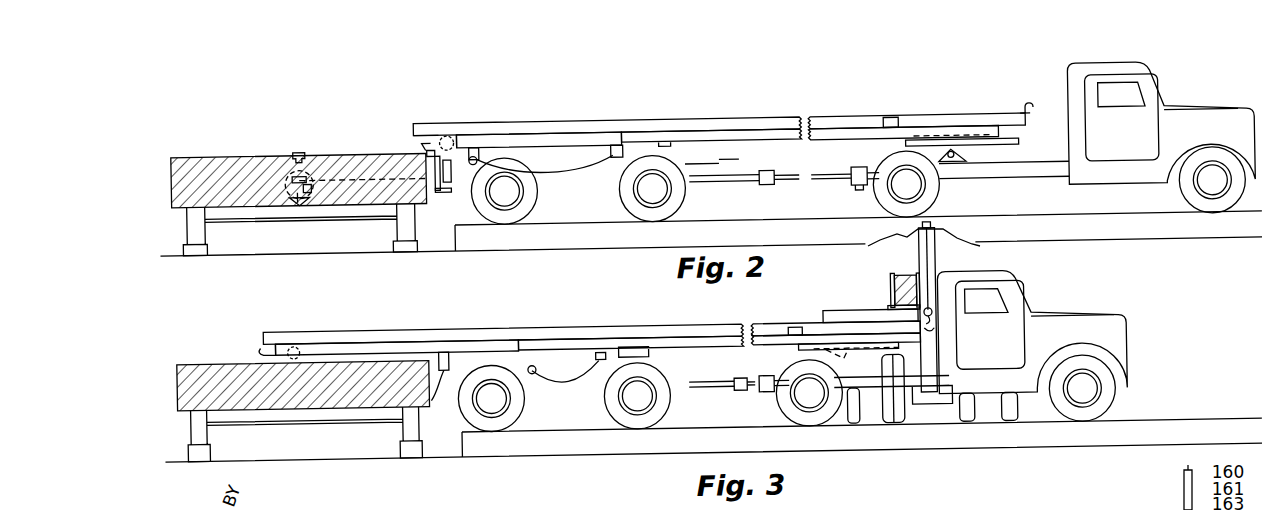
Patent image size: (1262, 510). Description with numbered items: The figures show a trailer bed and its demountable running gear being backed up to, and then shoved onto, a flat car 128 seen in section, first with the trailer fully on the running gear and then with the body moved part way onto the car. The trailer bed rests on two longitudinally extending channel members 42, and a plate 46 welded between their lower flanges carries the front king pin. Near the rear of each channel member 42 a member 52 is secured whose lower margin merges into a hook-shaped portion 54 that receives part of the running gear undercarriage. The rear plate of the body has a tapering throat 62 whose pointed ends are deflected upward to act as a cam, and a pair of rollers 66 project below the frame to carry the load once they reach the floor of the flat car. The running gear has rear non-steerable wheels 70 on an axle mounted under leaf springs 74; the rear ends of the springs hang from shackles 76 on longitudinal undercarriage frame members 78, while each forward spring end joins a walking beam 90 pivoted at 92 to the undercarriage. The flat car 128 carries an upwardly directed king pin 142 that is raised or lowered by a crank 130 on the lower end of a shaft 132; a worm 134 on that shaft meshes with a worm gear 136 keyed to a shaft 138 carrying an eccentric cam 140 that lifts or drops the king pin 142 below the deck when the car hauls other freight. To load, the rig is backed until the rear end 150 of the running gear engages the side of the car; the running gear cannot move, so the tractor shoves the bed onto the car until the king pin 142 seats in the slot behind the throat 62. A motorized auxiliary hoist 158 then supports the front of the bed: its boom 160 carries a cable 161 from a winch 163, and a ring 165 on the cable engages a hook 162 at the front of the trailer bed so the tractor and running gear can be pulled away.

In FIG. 2, the flat car 128 is at (216, 158).
In FIG. 2, the worm 134 is at (294, 175).
In FIG. 2, the king pin 142 is at (301, 149).
In FIG. 2, the eccentric cam 140 is at (312, 182).
In FIG. 2, the shaft 138 is at (295, 200).
In FIG. 2, the worm gear 136 is at (304, 198).
In FIG. 2, the tapering throat 62 is at (425, 150).
In FIG. 3, the tapering throat 62 is at (268, 351).
In FIG. 2, the shaft 132 is at (438, 156).
In FIG. 2, the rear end of the running gear 150 is at (458, 128).
In FIG. 2, the member 52 is at (558, 126).
In FIG. 3, the member 52 is at (494, 340).
In FIG. 2, the hook-shaped portion 54 is at (600, 139).
In FIG. 3, the hook-shaped portion 54 is at (374, 343).
In FIG. 2, the undercarriage frame members 78 is at (647, 144).
In FIG. 3, the undercarriage frame members 78 is at (570, 347).
In FIG. 2, the rollers 66 is at (448, 151).
In FIG. 3, the rollers 66 is at (296, 351).
In FIG. 2, the crank 130 is at (445, 193).
In FIG. 2, the rear non-steerable wheels 70 is at (512, 210).
In FIG. 3, the rear non-steerable wheels 70 is at (500, 418).
In FIG. 2, the plate 46 is at (940, 142).
In FIG. 3, the plate 46 is at (833, 348).
In FIG. 2, the channel members 42 is at (866, 176).
In FIG. 2, the hook 162 is at (1027, 116).
In FIG. 3, the hook 162 is at (938, 338).
In FIG. 3, the shackles 76 is at (445, 352).
In FIG. 3, the pivot 92 is at (604, 355).
In FIG. 3, the walking beam 90 is at (550, 384).
In FIG. 3, the leaf springs 74 is at (434, 400).
In FIG. 3, the motorized auxiliary hoist 158 is at (857, 317).
In FIG. 3, the boom 160 is at (939, 254).
In FIG. 3, the cable 161 is at (940, 276).
In FIG. 3, the winch 163 is at (905, 283).
In FIG. 3, the ring 165 is at (938, 318).